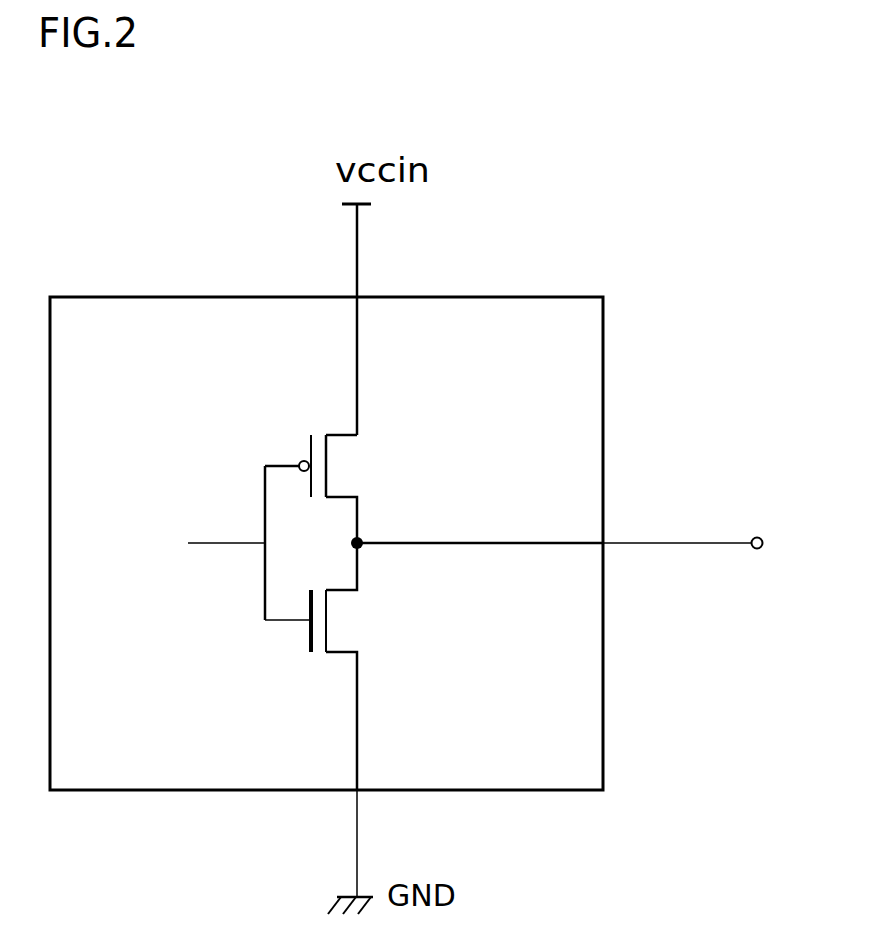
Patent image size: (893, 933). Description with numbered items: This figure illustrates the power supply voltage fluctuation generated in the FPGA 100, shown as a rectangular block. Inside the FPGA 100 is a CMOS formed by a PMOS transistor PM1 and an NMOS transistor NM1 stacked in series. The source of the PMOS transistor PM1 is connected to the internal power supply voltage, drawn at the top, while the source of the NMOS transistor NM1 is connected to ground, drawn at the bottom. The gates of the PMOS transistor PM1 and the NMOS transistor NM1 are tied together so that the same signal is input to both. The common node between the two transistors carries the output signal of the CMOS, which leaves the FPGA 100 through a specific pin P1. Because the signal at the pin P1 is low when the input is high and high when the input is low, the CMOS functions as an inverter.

The FPGA 100 is at (605, 397).
The PMOS transistor PM1 is at (357, 466).
The NMOS transistor NM1 is at (357, 622).
The pin P1 is at (560, 509).